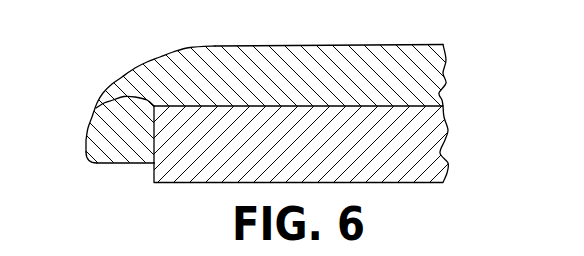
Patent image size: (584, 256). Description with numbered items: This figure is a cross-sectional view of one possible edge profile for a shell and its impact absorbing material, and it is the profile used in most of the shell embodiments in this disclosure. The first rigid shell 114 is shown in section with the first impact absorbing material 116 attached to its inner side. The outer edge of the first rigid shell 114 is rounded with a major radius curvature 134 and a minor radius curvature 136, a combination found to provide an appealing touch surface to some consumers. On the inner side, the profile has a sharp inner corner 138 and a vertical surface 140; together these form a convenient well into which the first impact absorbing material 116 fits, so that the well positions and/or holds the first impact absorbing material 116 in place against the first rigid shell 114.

The first rigid shell 114 is at (397, 44).
The first impact absorbing material 116 is at (397, 183).
The major radius curvature 134 is at (132, 73).
The minor radius curvature 136 is at (87, 158).
The sharp inner corner 138 is at (111, 102).
The vertical surface 140 is at (153, 146).